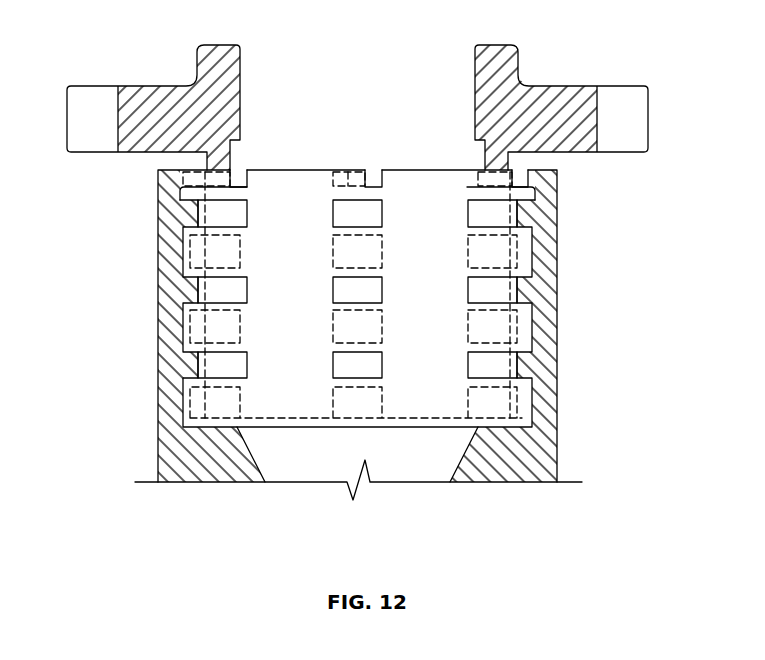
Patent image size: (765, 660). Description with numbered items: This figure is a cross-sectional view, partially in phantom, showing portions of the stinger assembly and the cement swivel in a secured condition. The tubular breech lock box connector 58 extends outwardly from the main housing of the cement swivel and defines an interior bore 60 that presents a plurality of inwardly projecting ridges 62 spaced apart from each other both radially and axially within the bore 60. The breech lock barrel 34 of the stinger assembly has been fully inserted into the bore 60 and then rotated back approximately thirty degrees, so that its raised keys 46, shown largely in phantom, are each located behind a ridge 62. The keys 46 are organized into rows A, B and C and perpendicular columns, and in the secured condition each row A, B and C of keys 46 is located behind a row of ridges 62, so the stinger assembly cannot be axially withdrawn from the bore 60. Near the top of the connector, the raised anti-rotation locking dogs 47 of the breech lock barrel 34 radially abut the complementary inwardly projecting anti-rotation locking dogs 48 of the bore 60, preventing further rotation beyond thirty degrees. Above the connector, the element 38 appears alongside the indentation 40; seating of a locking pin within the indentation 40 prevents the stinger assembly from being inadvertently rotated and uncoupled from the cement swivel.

The clamp 38 is at (648, 118).
The indentation 40 is at (389, 107).
The anti-rotation locking dog 47 is at (183, 180).
The anti-rotation locking dog 48 is at (238, 178).
The breech lock barrel 34 is at (172, 199).
The interior bore 60 is at (455, 186).
The breech lock box connector 58 is at (540, 460).
The ridge 62 is at (233, 212).
The raised key 46 is at (190, 262).
The row A is at (182, 425).
The row B is at (182, 328).
The row C is at (182, 245).